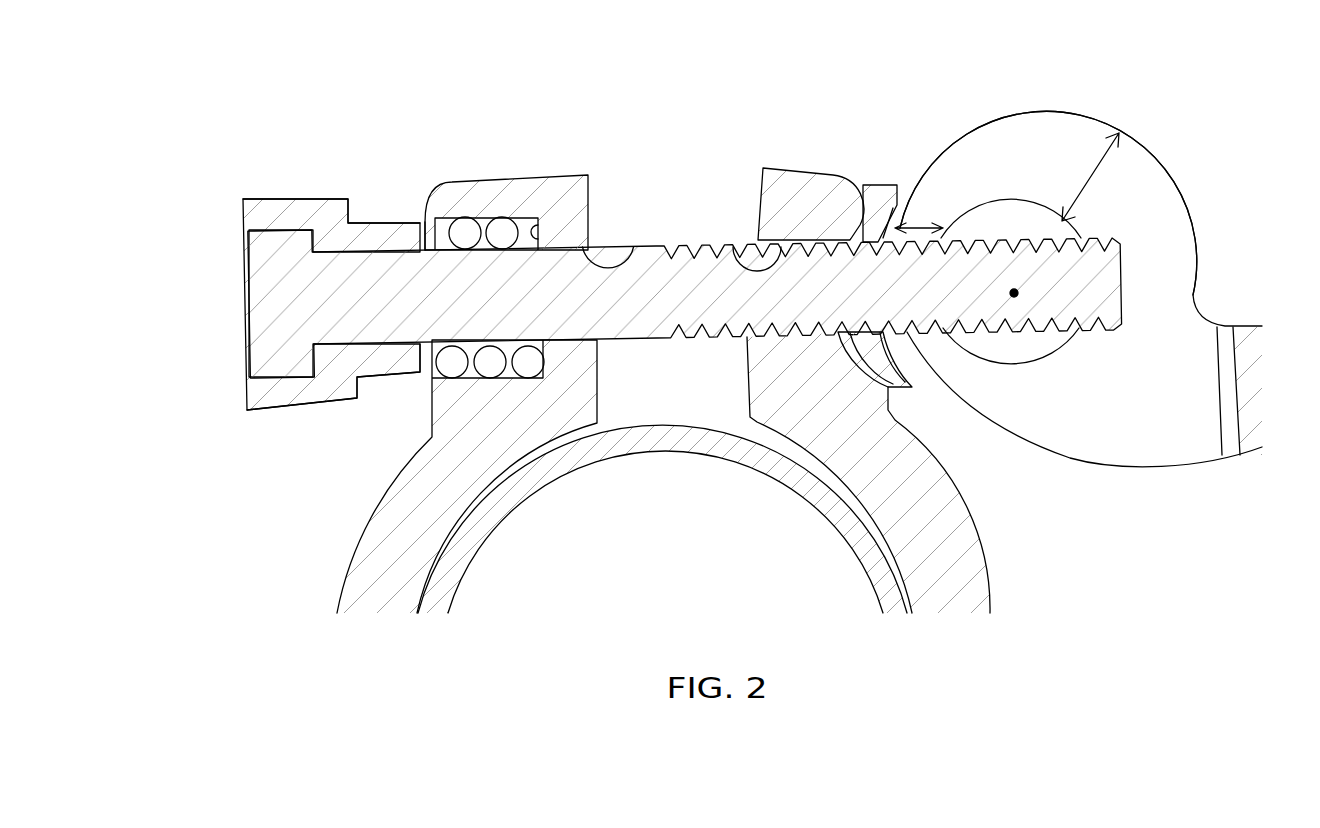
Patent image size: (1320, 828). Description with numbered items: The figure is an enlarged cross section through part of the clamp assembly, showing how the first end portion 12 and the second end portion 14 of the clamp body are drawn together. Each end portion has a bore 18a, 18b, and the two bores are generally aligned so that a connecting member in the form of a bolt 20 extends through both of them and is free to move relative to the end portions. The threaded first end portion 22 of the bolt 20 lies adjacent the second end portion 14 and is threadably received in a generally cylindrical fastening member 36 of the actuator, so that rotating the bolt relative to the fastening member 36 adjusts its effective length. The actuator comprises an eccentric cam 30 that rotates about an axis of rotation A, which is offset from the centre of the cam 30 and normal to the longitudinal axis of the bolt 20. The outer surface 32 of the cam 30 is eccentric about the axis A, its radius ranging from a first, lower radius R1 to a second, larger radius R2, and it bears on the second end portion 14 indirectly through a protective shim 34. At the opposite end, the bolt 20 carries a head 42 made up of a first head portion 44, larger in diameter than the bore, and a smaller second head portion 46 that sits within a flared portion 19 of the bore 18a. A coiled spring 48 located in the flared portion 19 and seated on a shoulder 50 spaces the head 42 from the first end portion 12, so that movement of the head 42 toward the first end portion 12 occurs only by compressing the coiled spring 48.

The first end portion 12 is at (547, 213).
The second end portion 14 is at (813, 215).
The bore 18a is at (635, 247).
The bore 18b is at (733, 247).
The flared portion 19 is at (427, 217).
The bolt 20 is at (641, 314).
The first end portion 22 is at (1095, 280).
The cam 30 is at (1130, 417).
The outer surface 32 is at (957, 403).
The protective shim 34 is at (878, 197).
The fastening member 36 is at (1008, 222).
The head 42 is at (323, 163).
The first head portion 44 is at (273, 213).
The second head portion 46 is at (393, 360).
The coiled spring 48 is at (502, 232).
The shoulder 50 is at (545, 228).
The axis of rotation A is at (1014, 293).
The first radius R1 is at (917, 228).
The second radius R2 is at (1093, 220).